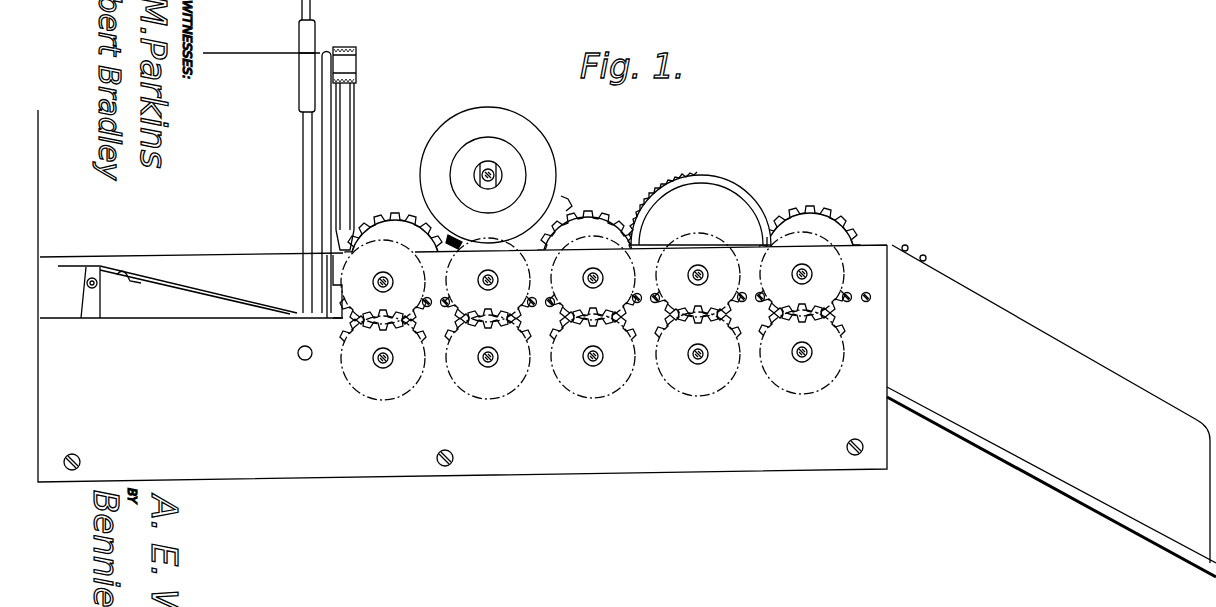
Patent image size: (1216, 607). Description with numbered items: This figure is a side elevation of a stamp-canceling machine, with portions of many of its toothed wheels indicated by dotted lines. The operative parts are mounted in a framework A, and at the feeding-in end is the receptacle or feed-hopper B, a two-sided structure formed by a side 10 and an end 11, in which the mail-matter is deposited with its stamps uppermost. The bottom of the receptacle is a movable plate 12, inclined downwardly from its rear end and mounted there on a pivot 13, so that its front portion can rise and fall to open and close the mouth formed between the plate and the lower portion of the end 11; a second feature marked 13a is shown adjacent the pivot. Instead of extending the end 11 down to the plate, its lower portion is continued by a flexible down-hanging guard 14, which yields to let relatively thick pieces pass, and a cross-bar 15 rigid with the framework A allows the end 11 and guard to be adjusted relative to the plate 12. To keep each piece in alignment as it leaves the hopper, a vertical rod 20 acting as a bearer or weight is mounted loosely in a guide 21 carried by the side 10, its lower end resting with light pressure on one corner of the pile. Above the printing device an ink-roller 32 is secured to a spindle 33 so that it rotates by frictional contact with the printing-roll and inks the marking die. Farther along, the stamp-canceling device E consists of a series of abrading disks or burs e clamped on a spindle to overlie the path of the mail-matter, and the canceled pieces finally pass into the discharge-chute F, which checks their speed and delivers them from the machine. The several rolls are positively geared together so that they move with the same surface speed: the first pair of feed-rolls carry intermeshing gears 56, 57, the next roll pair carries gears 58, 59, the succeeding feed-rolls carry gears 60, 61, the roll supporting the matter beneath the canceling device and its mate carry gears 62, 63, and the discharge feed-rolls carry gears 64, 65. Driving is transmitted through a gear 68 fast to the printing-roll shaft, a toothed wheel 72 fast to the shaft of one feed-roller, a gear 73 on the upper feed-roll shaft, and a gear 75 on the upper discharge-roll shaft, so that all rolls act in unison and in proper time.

The receptacle side 10 is at (228, 58).
The receptacle end 11 is at (330, 137).
The movable plate 12 is at (209, 300).
The pivot 13 is at (86, 285).
The hook 13a is at (123, 279).
The flexible down-hanging guard 14 is at (335, 317).
The cross-bar 15 is at (338, 252).
The vertical rod 20 is at (306, 210).
The guide 21 is at (302, 90).
The ink-roller 32 is at (488, 175).
The spindle 33 is at (487, 170).
The gear 56 is at (383, 285).
The gear 57 is at (385, 357).
The gear 58 is at (488, 283).
The gear 59 is at (488, 354).
The gear 60 is at (593, 281).
The gear 61 is at (593, 353).
The gear 62 is at (698, 278).
The gear 63 is at (698, 351).
The gear 64 is at (802, 277).
The gear 65 is at (802, 349).
The gear 68 is at (559, 197).
The toothed wheel 72 is at (382, 207).
The gear 73 is at (603, 217).
The gear 75 is at (830, 218).
The framework A is at (462, 296).
The receptacle or feed-hopper B is at (206, 173).
The stamp-canceling device E is at (701, 196).
The abrading disks e is at (668, 183).
The discharge-chute F is at (1051, 411).